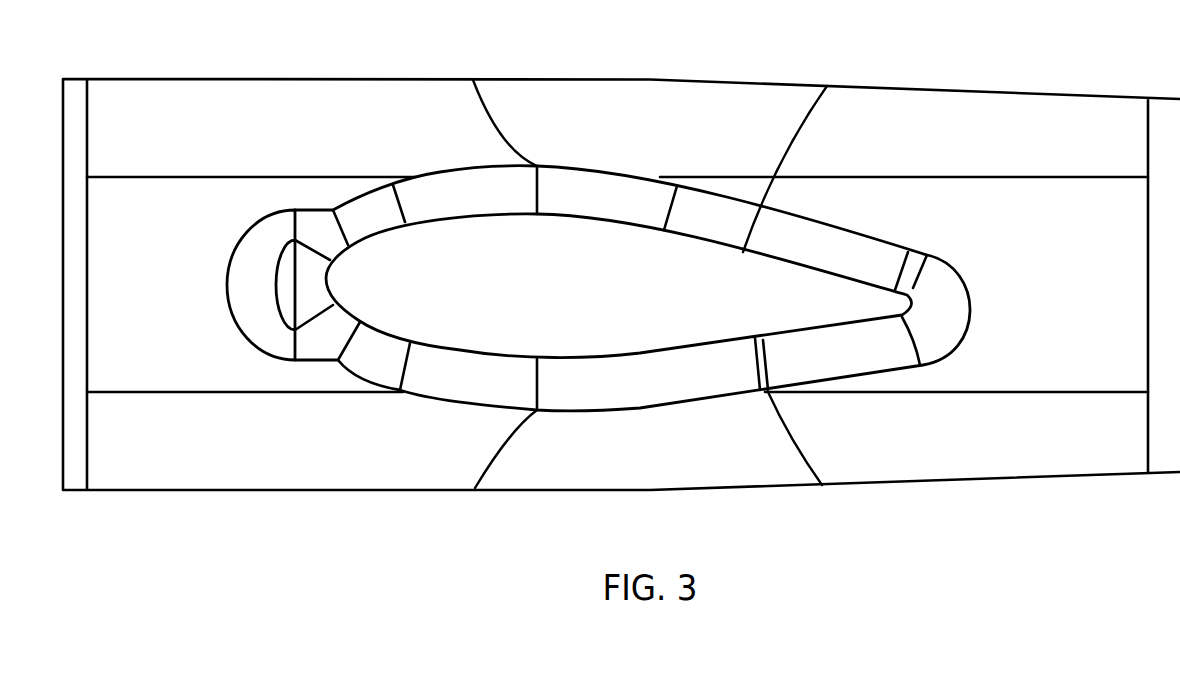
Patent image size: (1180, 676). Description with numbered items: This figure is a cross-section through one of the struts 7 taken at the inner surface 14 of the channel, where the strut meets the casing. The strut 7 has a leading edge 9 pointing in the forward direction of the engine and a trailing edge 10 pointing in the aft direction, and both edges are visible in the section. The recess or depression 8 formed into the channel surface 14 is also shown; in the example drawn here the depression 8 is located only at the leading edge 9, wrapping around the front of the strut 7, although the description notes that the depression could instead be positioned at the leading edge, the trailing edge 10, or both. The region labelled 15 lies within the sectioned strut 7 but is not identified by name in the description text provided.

The inner surface of the channel 14 is at (122, 98).
The strut 7 is at (700, 335).
The recess or depression 8 is at (276, 337).
The core / inner airfoil body 15 is at (485, 240).
The leading edge 9 is at (335, 255).
The trailing edge 10 is at (885, 303).